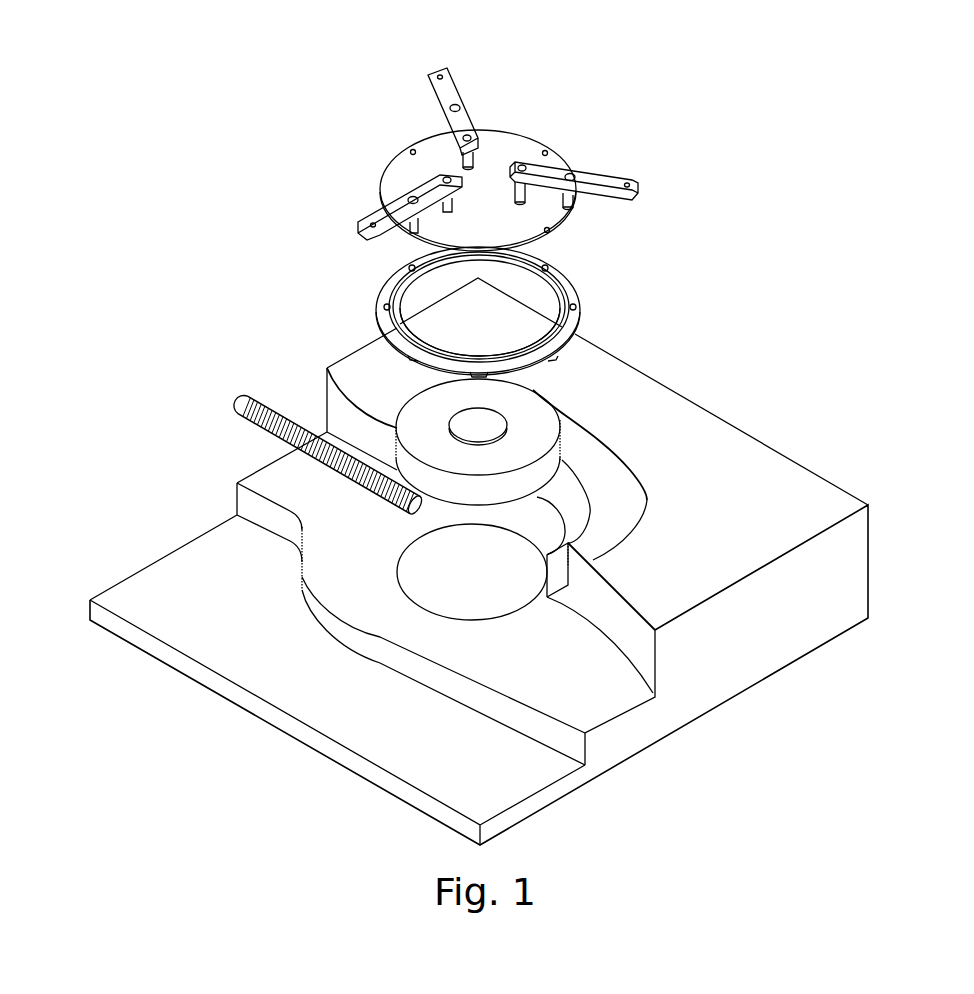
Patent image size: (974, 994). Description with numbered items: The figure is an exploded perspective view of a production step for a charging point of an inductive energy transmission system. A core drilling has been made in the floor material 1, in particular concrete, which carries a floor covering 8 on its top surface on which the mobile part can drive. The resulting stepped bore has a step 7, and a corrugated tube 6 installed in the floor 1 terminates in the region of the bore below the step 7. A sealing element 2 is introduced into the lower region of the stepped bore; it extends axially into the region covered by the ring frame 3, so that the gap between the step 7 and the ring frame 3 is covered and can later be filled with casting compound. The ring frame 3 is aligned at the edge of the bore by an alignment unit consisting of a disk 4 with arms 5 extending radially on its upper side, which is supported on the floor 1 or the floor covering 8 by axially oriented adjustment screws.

The floor material 1 is at (614, 506).
The sealing element 2 is at (537, 428).
The ring frame 3 is at (563, 287).
The disk 4 is at (502, 150).
The arms 5 is at (445, 92).
The corrugated tube 6 is at (262, 421).
The step 7 is at (568, 566).
The floor covering 8 is at (772, 523).